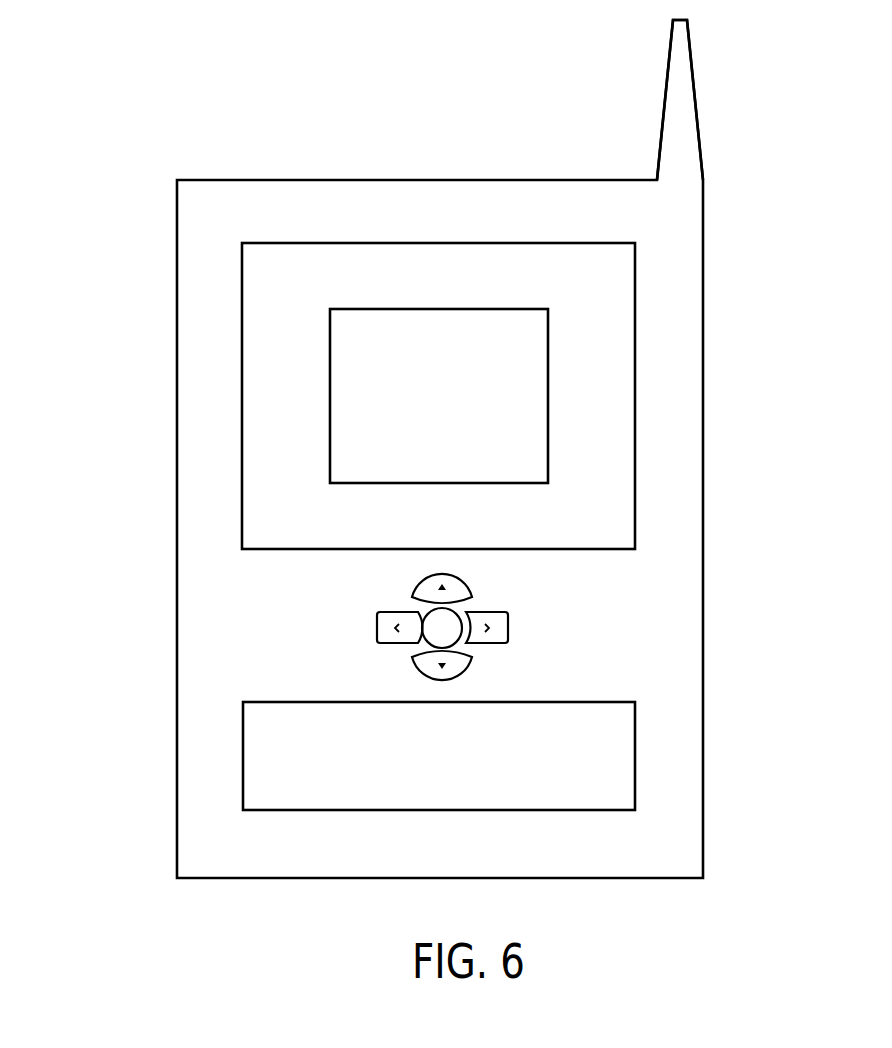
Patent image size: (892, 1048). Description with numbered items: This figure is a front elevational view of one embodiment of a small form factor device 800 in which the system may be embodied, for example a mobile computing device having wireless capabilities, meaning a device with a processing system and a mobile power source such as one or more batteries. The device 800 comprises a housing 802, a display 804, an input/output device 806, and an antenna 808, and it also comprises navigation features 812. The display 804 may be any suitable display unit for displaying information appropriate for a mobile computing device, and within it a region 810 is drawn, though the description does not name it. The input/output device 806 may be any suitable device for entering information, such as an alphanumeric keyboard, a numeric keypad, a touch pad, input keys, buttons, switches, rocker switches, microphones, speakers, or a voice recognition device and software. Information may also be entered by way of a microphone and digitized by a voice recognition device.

The small form factor device 800 is at (174, 116).
The housing 802 is at (177, 618).
The display 804 is at (635, 298).
The input/output (I/O) device 806 is at (635, 755).
The antenna 808 is at (665, 98).
The display window 810 is at (438, 308).
The navigation features 812 is at (547, 629).